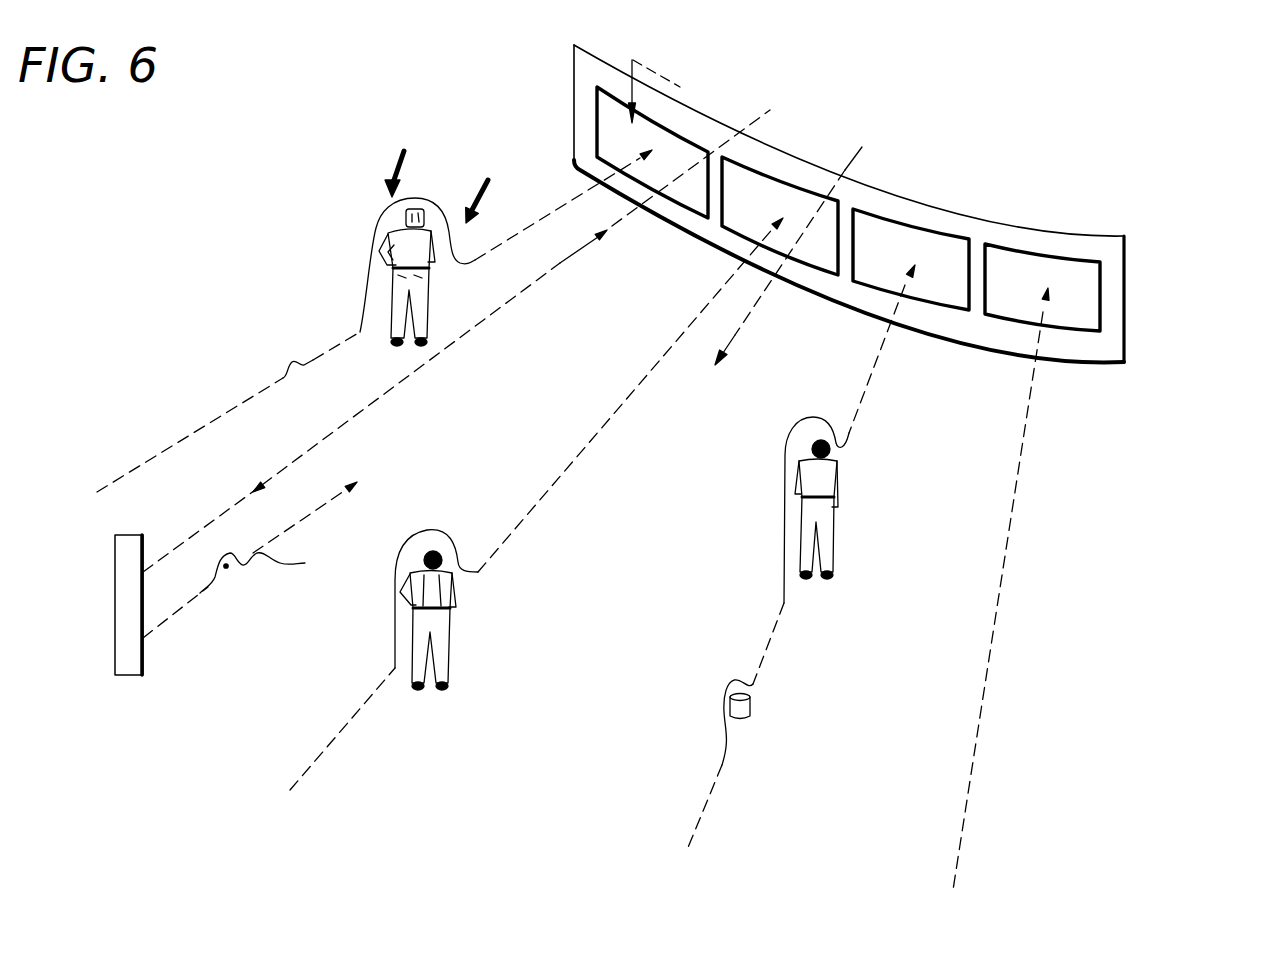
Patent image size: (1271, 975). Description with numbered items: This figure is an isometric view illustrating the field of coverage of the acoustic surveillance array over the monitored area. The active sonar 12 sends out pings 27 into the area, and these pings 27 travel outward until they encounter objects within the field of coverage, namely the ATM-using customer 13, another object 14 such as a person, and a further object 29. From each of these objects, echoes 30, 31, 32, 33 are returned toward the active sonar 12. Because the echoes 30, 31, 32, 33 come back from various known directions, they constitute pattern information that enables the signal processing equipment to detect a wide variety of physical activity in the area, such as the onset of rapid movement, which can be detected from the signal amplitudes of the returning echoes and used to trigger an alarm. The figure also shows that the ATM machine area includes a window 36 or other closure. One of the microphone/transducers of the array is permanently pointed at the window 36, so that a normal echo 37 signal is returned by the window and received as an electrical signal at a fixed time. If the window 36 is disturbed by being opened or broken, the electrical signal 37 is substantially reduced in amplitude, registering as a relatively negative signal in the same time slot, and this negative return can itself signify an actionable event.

The active sonar 12 is at (1210, 273).
The customer 13 is at (475, 323).
The object 14 is at (528, 658).
The pings 27 is at (744, 128).
The object 29 is at (830, 742).
The echo 30 is at (453, 164).
The echo 31 is at (453, 484).
The echo 32 is at (710, 445).
The echo 33 is at (678, 645).
The window 36 is at (213, 663).
The normal echo signal 37 is at (312, 563).